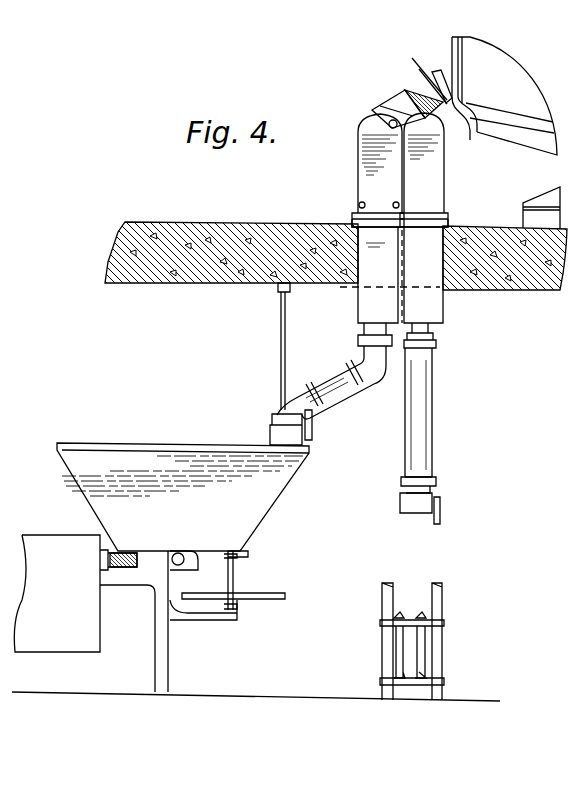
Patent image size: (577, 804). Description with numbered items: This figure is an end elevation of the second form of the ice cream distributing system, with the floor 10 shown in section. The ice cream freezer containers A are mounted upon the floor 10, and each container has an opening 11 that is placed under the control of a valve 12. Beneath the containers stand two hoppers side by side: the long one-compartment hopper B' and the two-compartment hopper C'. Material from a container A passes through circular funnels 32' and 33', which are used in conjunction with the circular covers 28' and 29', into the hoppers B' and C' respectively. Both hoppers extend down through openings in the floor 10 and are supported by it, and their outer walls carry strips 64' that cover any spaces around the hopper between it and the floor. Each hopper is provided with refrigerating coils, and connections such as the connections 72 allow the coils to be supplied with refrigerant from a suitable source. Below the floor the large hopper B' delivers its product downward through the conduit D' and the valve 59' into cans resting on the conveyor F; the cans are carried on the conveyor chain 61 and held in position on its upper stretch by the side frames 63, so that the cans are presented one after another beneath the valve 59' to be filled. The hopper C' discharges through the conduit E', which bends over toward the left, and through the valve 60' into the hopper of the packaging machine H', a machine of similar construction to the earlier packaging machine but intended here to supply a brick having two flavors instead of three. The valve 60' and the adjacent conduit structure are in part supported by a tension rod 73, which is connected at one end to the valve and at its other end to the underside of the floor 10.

The floor 10 is at (217, 209).
The openings 11 is at (450, 72).
The valve 12 is at (419, 69).
The cover 28' is at (465, 129).
The cover 29' is at (358, 115).
The funnel 32' is at (407, 93).
The funnel 33' is at (385, 107).
The valve 59' is at (410, 515).
The valve 60' is at (265, 427).
The conveyor chain 61 is at (444, 666).
The side frames 63 is at (432, 585).
The strips 64' is at (373, 210).
The connections 72 is at (411, 196).
The tension rod 73 is at (281, 352).
The containers A is at (485, 62).
The hopper B' is at (441, 170).
The hopper C' is at (364, 170).
The conduit D' is at (436, 408).
The conduit E' is at (334, 371).
The conveyor F is at (442, 582).
The packaging machine H' is at (183, 487).